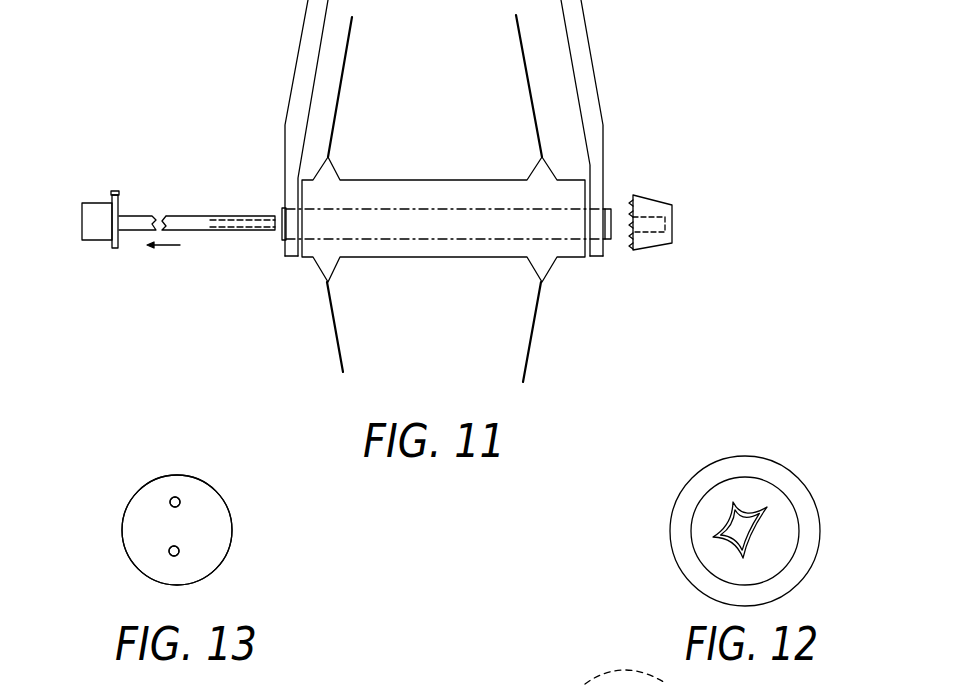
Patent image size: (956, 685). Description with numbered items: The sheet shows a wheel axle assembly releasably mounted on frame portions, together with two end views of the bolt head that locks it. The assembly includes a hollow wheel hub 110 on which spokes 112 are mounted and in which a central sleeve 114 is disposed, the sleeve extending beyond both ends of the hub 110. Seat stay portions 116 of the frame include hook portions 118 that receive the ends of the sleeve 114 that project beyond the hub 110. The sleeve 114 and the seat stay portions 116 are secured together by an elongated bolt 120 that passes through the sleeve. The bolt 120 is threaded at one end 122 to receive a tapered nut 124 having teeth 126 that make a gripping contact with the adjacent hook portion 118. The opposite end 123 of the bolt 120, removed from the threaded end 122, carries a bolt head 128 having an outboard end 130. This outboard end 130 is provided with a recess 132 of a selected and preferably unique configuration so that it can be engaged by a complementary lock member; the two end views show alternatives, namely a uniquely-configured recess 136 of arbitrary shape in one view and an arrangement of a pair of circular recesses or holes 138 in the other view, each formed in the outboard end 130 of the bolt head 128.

In FIG. 11, the hollow wheel hub 110 is at (445, 180).
In FIG. 11, the spokes 112 is at (518, 50).
In FIG. 11, the central sleeve 114 is at (423, 239).
In FIG. 11, the seat stay portions 116 is at (300, 45).
In FIG. 11, the hook portions 118 is at (287, 254).
In FIG. 11, the elongated bolt 120 is at (140, 212).
In FIG. 11, the threaded end 122 is at (262, 212).
In FIG. 11, the opposite end 123 is at (107, 179).
In FIG. 11, the tapered nut 124 is at (640, 195).
In FIG. 11, the teeth 126 is at (632, 247).
In FIG. 11, the bolt head 128 is at (103, 242).
In FIG. 13, the bolt head 128 is at (225, 500).
In FIG. 12, the bolt head 128 is at (767, 458).
In FIG. 11, the outboard end 130 is at (81, 220).
In FIG. 13, the outboard end 130 is at (220, 520).
In FIG. 12, the outboard end 130 is at (778, 498).
In FIG. 13, the recess 132 is at (169, 551).
In FIG. 12, the recess 132 is at (750, 537).
In FIG. 12, the recess of arbitrary shape 136 is at (763, 530).
In FIG. 13, the circular recesses 138 is at (177, 497).